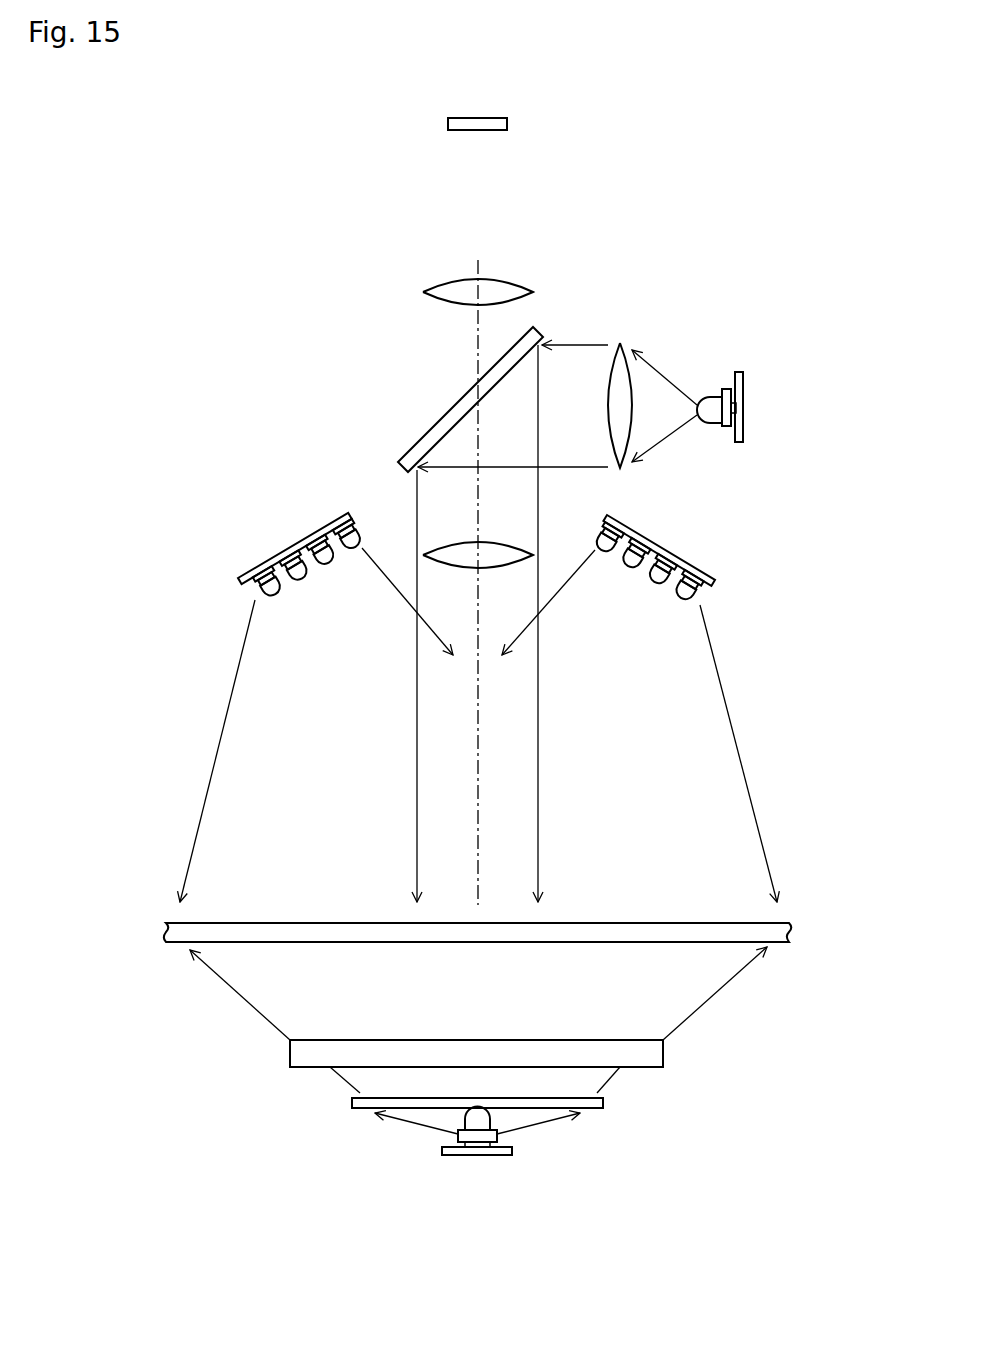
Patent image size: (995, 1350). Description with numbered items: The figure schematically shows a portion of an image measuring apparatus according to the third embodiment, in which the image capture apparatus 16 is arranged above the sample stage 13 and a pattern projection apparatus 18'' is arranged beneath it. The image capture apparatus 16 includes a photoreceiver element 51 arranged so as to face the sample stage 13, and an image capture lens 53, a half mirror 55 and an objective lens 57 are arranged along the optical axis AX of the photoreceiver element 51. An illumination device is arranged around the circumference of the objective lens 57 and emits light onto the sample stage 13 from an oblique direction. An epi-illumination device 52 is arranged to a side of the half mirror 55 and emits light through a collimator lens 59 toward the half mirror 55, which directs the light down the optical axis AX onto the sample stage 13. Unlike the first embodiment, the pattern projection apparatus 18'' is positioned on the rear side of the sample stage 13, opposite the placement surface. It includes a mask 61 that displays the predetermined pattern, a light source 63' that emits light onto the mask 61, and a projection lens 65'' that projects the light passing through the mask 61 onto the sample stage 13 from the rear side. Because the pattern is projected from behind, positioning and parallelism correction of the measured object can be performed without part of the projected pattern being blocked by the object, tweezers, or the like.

The sample stage 13 is at (777, 923).
The image capture apparatus 16 is at (350, 232).
The pattern projection apparatus 18'' is at (236, 1129).
The photoreceiver element 51 is at (447, 124).
The epi-illumination device 52 is at (743, 392).
The image capture lens 53 is at (422, 292).
The half mirror 55 is at (538, 333).
The objective lens 57 is at (500, 542).
The collimator lens 59 is at (620, 343).
The mask 61 is at (590, 1110).
The light source 63' is at (477, 1157).
The projection lens 65'' is at (478, 1020).
The optical axis AX is at (478, 786).